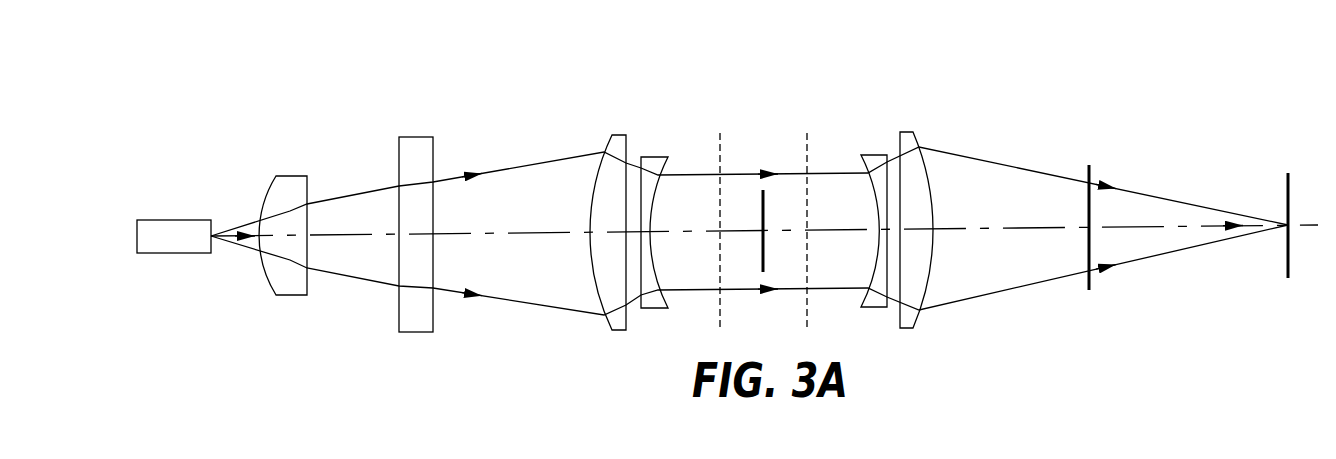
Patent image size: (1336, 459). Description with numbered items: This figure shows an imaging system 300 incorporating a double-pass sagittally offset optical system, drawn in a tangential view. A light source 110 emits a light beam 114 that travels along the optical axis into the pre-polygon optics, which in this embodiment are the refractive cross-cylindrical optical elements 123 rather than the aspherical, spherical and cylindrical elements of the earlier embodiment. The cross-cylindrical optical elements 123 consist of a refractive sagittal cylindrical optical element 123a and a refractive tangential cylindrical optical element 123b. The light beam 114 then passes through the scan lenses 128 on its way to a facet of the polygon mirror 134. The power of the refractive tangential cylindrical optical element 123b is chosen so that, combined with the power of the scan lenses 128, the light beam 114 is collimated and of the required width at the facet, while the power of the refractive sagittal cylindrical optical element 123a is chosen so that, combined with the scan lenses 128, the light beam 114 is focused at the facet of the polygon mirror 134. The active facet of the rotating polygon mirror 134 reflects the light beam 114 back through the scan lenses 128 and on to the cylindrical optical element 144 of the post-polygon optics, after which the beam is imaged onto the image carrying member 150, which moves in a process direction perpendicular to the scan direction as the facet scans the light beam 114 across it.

The imaging system 300 is at (1148, 52).
The light source 110 is at (152, 220).
The light beam 114 is at (263, 253).
The refractive cross-cylindrical optical elements 123 is at (325, 201).
The refractive sagittal cylindrical optical element 123a is at (292, 176).
The refractive tangential cylindrical optical element 123b is at (433, 122).
The scan lenses 128 is at (669, 125).
The polygon mirror 134 is at (762, 205).
The cylindrical optical element 144 is at (1087, 173).
The image carrying member 150 is at (1288, 263).